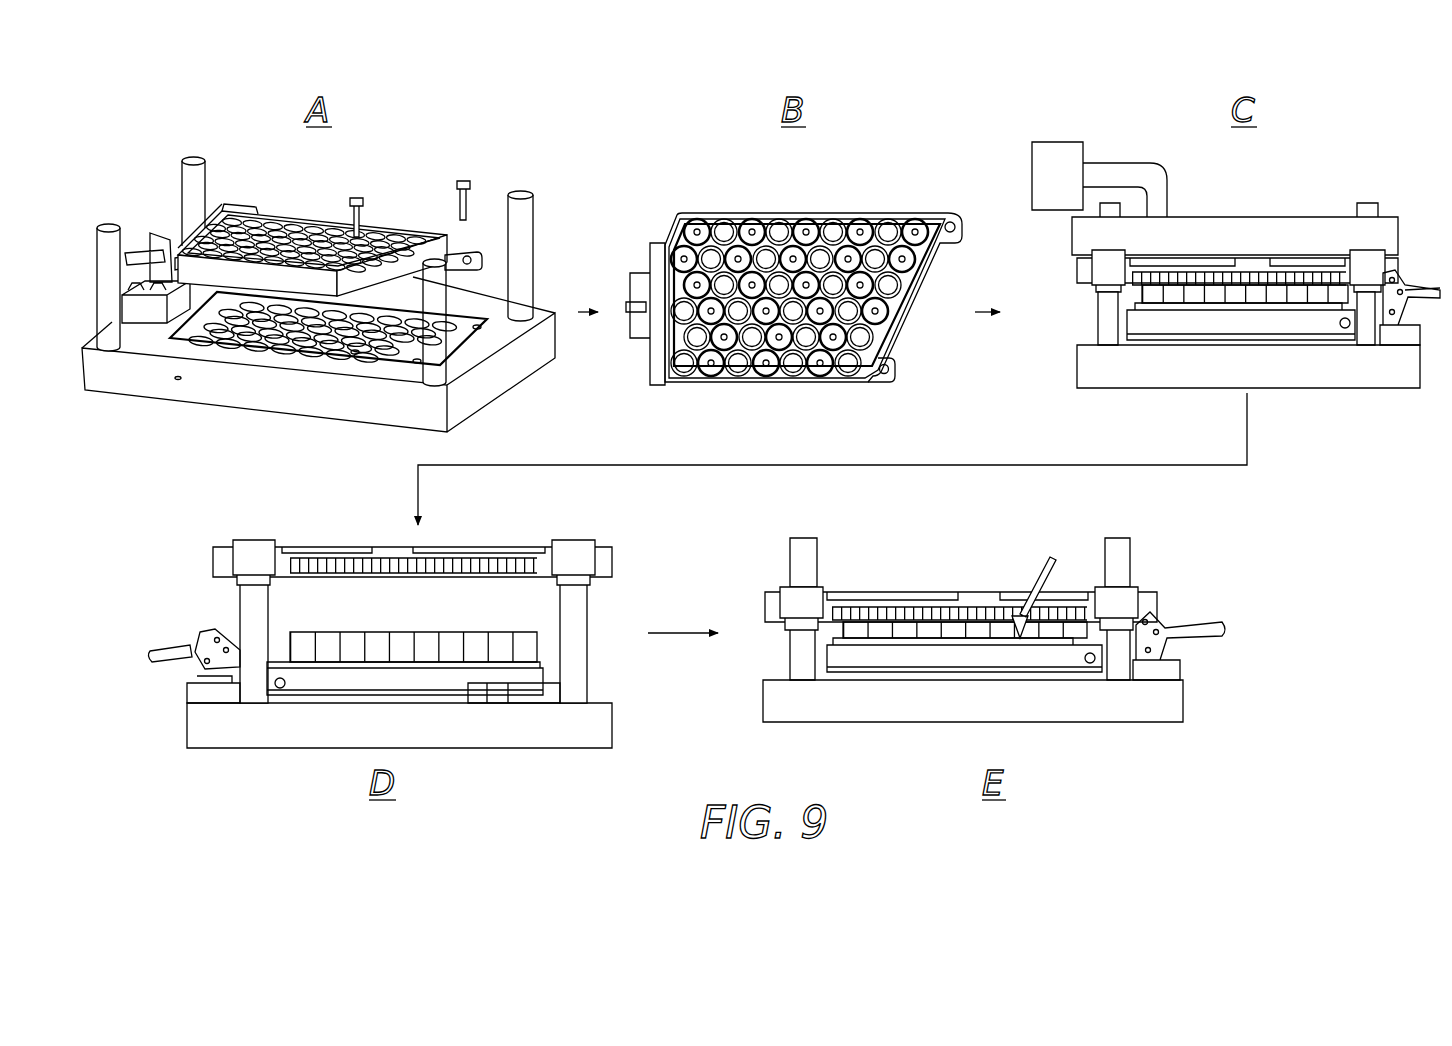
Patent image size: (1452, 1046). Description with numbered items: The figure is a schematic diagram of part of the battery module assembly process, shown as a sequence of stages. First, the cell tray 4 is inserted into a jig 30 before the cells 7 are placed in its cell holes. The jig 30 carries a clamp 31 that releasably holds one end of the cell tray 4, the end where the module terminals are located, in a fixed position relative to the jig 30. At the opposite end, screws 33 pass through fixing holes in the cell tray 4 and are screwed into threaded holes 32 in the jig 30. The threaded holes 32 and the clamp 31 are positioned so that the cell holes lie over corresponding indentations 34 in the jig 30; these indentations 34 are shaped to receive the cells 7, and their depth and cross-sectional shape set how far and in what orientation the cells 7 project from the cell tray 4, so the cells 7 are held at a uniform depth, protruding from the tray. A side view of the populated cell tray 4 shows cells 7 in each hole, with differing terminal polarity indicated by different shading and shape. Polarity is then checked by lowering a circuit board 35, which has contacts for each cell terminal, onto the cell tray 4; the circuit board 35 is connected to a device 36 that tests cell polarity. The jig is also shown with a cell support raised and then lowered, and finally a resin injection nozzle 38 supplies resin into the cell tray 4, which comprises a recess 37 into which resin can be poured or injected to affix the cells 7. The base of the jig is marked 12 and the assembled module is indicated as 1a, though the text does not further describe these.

The jig 30 is at (178, 140).
The clamp 31 is at (137, 237).
The recess 37 is at (266, 210).
The cell tray 4 is at (330, 223).
The screws 33 is at (455, 186).
The threaded holes 32 is at (355, 355).
The indentations 34 is at (248, 338).
The cells 7 is at (697, 222).
The device 36 is at (1057, 148).
The circuit board 35 is at (1293, 228).
The base plate 12 is at (264, 737).
The assembled battery module 1a is at (688, 636).
The resin injection nozzle 38 is at (1043, 578).